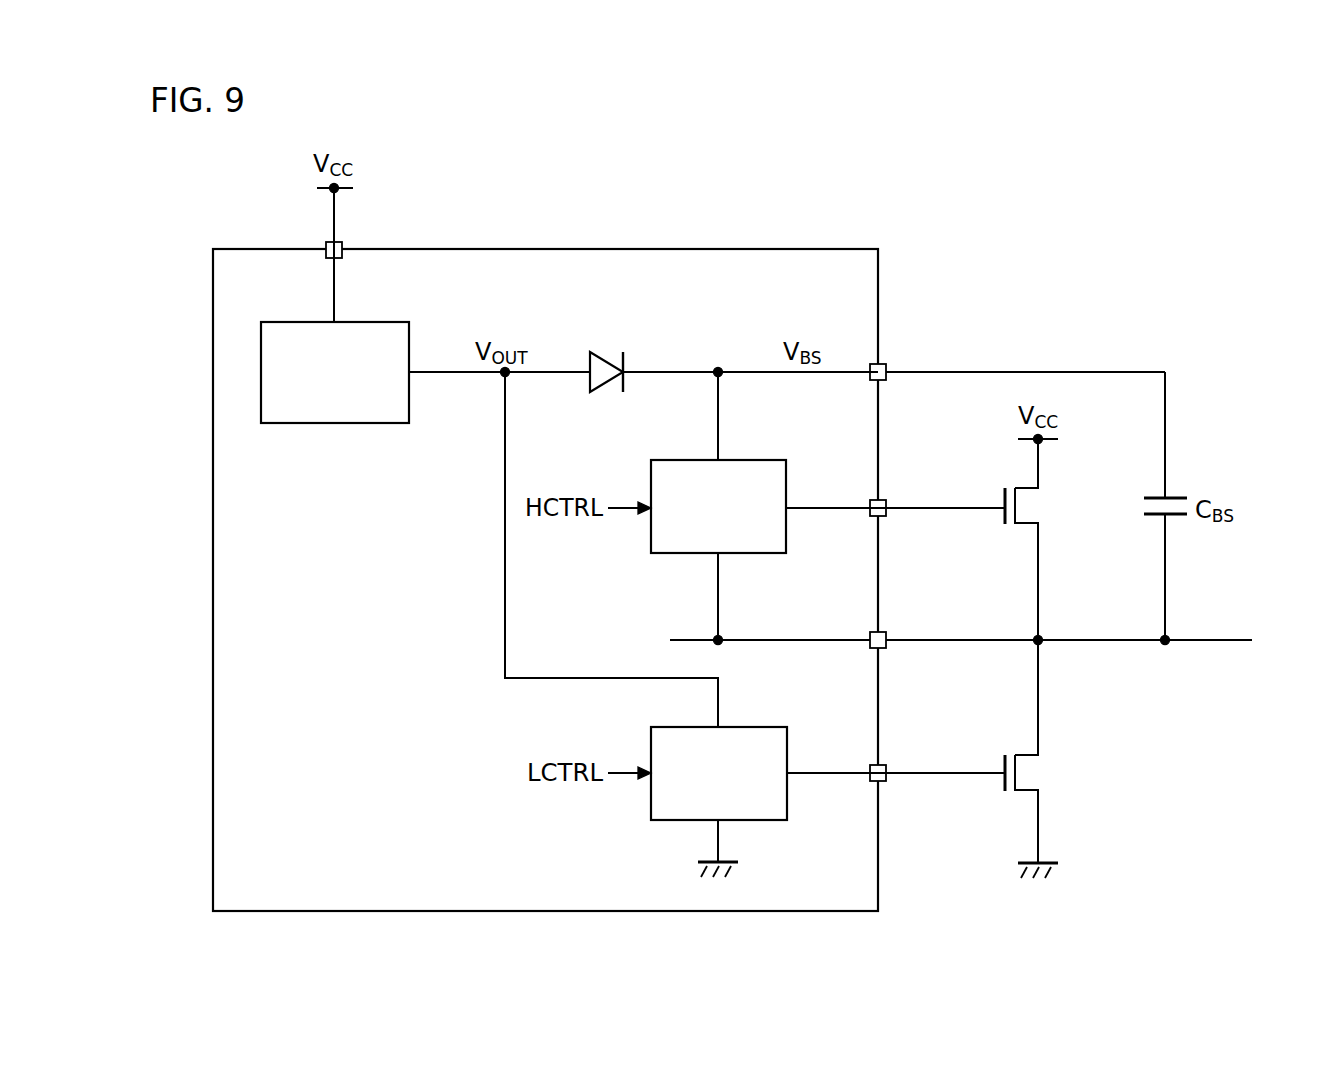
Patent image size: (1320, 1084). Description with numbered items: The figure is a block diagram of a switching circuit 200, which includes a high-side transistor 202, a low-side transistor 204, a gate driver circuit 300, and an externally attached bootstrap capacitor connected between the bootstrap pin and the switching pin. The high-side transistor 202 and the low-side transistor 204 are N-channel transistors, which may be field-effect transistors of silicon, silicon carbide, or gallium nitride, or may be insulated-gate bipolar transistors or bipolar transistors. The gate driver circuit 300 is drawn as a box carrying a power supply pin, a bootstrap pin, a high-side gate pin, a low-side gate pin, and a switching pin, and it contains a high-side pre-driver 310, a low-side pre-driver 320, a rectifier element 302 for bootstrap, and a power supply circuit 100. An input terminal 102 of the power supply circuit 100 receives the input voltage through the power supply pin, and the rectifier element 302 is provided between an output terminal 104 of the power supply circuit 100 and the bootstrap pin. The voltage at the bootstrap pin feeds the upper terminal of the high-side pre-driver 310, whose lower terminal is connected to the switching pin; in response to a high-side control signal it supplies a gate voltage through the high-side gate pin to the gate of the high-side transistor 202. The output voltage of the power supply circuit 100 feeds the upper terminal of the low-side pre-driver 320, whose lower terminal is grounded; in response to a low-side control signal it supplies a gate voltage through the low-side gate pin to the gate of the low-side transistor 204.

The power supply circuit 100 is at (400, 322).
The input terminal 102 is at (333, 320).
The output terminal 104 is at (410, 376).
The switching circuit 200 is at (1212, 167).
The high-side transistor 202 is at (1040, 506).
The low-side transistor 204 is at (1040, 773).
The gate driver circuit 300 is at (733, 249).
The rectifier element 302 is at (627, 356).
The high-side pre-driver 310 is at (763, 460).
The low-side pre-driver 320 is at (763, 727).